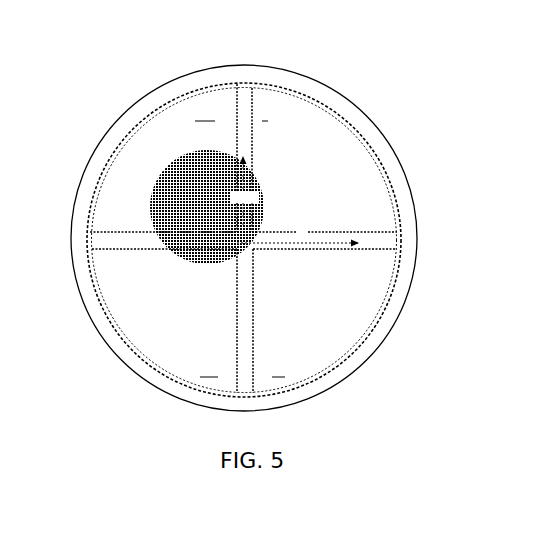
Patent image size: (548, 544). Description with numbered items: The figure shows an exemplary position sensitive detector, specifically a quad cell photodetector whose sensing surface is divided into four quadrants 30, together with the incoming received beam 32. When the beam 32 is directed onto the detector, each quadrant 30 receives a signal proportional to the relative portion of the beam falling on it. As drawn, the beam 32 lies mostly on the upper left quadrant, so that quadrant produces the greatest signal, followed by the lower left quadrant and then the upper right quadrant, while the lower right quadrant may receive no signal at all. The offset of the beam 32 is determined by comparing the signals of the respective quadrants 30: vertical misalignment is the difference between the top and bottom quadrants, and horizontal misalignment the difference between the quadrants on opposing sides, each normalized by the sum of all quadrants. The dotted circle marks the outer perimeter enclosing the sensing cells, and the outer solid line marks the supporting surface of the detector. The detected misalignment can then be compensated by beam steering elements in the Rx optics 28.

The Rx optics 28 is at (127, 76).
The quadrants 30 is at (161, 301).
The beam 32 is at (206, 207).